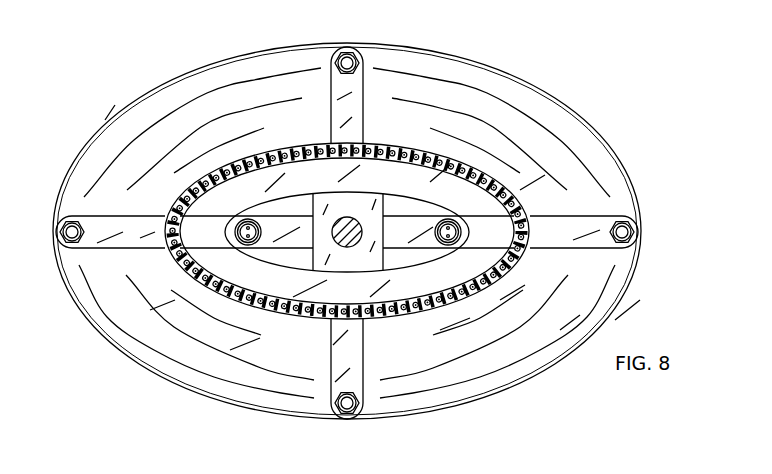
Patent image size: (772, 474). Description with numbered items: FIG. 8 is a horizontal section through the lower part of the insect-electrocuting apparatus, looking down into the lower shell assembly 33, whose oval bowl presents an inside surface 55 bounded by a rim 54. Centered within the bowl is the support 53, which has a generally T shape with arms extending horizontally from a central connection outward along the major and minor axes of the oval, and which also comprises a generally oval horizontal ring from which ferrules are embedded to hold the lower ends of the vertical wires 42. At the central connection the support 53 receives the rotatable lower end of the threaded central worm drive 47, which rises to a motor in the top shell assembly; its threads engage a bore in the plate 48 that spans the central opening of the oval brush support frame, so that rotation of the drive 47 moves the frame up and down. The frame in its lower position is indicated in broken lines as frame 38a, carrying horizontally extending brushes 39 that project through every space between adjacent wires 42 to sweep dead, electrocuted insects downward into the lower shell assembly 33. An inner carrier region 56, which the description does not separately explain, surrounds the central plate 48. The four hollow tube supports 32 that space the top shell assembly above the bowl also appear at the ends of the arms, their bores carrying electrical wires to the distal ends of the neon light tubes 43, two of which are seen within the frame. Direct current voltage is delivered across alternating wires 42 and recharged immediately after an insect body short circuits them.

The tube supports 32 is at (328, 0).
The lower shell assembly 33 is at (598, 107).
The brush support frame (lower position) 38a is at (245, 186).
The brushes 39 is at (249, 158).
The wires 42 is at (195, 186).
The neon light tubes 43 is at (533, 404).
The central worm drive 47 is at (347, 241).
The plate 48 is at (325, 256).
The support 53 is at (593, 223).
The rim 54 is at (551, 97).
The inside surface 55 is at (493, 120).
The inner carrier 56 is at (397, 206).